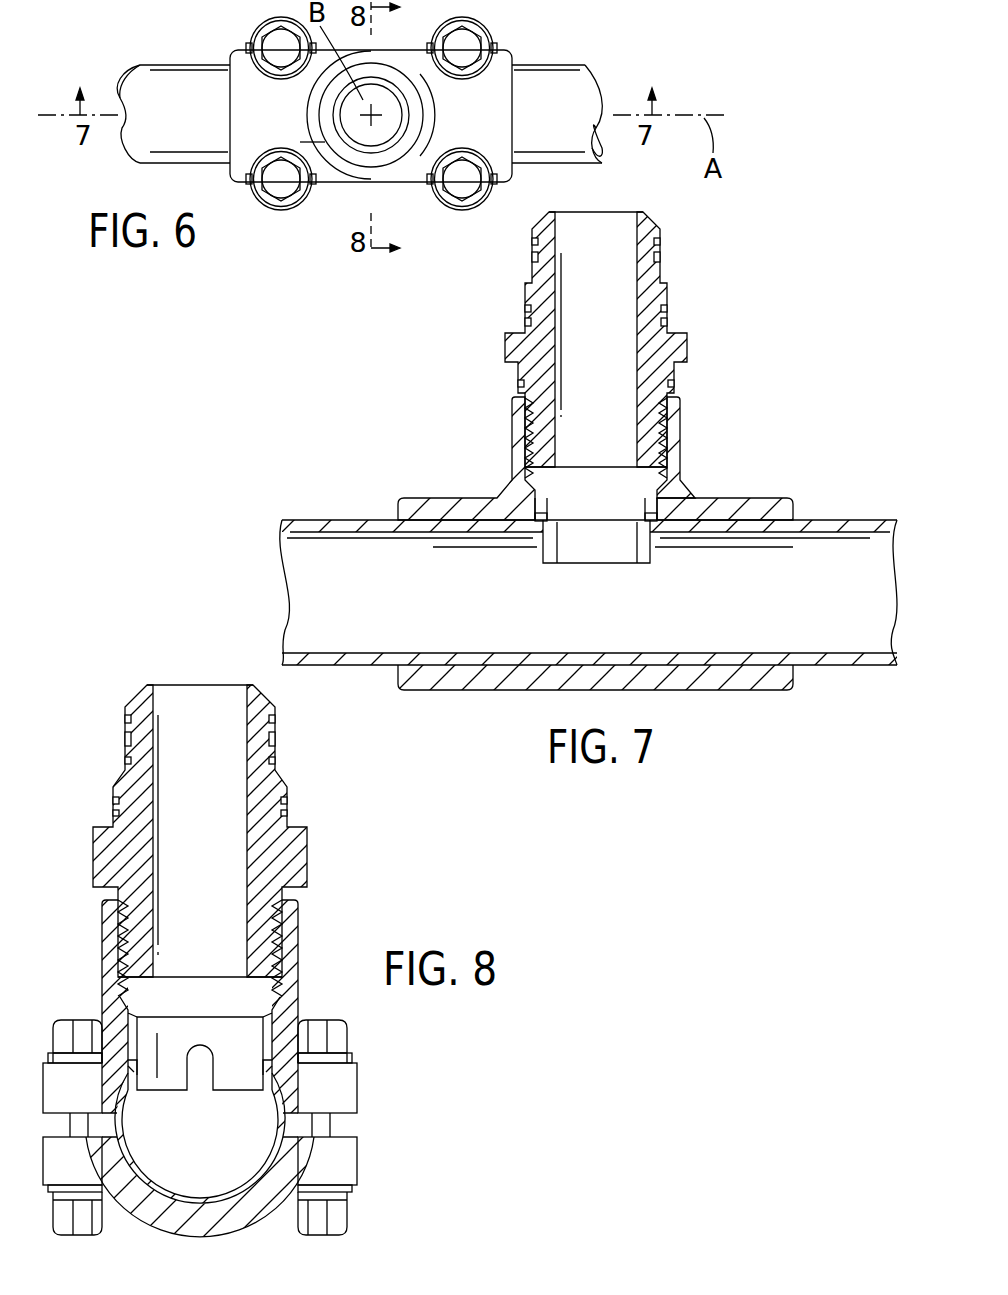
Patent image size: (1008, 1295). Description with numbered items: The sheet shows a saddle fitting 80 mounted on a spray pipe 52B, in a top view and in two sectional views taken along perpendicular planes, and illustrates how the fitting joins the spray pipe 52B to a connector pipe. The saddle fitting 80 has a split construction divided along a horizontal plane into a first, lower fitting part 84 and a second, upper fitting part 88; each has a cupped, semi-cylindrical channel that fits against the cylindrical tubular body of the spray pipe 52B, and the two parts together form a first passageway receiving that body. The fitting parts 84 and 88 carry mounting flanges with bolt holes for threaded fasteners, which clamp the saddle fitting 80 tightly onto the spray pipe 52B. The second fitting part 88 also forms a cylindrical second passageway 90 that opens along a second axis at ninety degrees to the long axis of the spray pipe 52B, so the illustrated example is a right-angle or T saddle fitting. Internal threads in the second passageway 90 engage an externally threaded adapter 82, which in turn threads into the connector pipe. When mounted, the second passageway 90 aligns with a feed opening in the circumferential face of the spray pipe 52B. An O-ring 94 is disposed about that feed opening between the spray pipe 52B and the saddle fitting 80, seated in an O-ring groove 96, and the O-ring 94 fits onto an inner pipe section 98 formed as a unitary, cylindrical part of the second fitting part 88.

In FIG. 6, the spray pipe 52B is at (550, 90).
In FIG. 7, the spray pipe 52B is at (826, 523).
In FIG. 8, the spray pipe 52B is at (275, 1150).
In FIG. 6, the saddle fitting 80 is at (503, 42).
In FIG. 7, the saddle fitting 80 is at (412, 490).
In FIG. 8, the saddle fitting 80 is at (305, 896).
In FIG. 7, the externally threaded adapter 82 is at (660, 300).
In FIG. 8, the externally threaded adapter 82 is at (282, 790).
In FIG. 7, the first fitting part 84 is at (460, 675).
In FIG. 8, the first fitting part 84 is at (223, 1220).
In FIG. 6, the second fitting part 88 is at (250, 145).
In FIG. 7, the second fitting part 88 is at (752, 497).
In FIG. 8, the second fitting part 88 is at (298, 935).
In FIG. 6, the second passageway 90 is at (356, 124).
In FIG. 7, the O-ring 94 is at (536, 517).
In FIG. 8, the O-ring 94 is at (260, 1066).
In FIG. 7, the O-ring groove 96 is at (660, 517).
In FIG. 8, the O-ring groove 96 is at (263, 1063).
In FIG. 7, the inner pipe section 98 is at (640, 563).
In FIG. 8, the inner pipe section 98 is at (148, 1090).